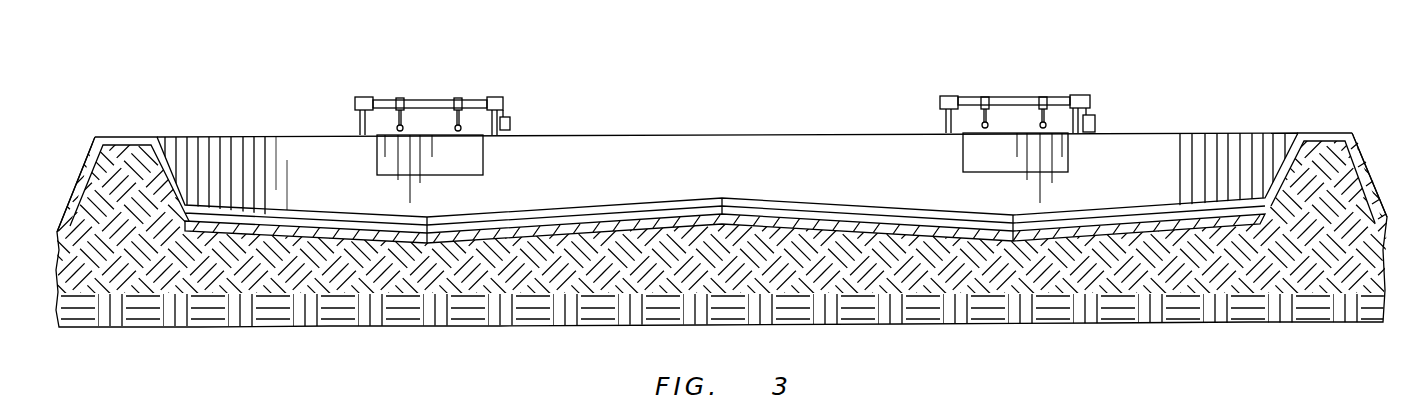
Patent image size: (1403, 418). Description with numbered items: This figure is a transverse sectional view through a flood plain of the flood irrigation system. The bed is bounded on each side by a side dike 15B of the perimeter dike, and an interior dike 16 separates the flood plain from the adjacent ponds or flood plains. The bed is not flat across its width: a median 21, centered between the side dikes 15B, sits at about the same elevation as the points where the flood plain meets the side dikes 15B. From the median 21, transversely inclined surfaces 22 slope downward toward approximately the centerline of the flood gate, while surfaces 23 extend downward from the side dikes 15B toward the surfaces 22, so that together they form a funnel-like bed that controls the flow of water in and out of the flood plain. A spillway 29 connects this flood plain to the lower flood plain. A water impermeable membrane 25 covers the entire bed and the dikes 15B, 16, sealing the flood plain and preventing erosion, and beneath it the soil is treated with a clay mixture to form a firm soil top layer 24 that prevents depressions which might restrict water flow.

The side dike 15B is at (72, 178).
The interior dike 16 is at (197, 136).
The median 21 is at (722, 198).
The transversely inclined surface 22 is at (657, 200).
The inclined surface 23 is at (290, 215).
The firm soil top layer 24 is at (1342, 255).
The water impermeable membrane 25 is at (553, 223).
The spillway 29 is at (465, 100).